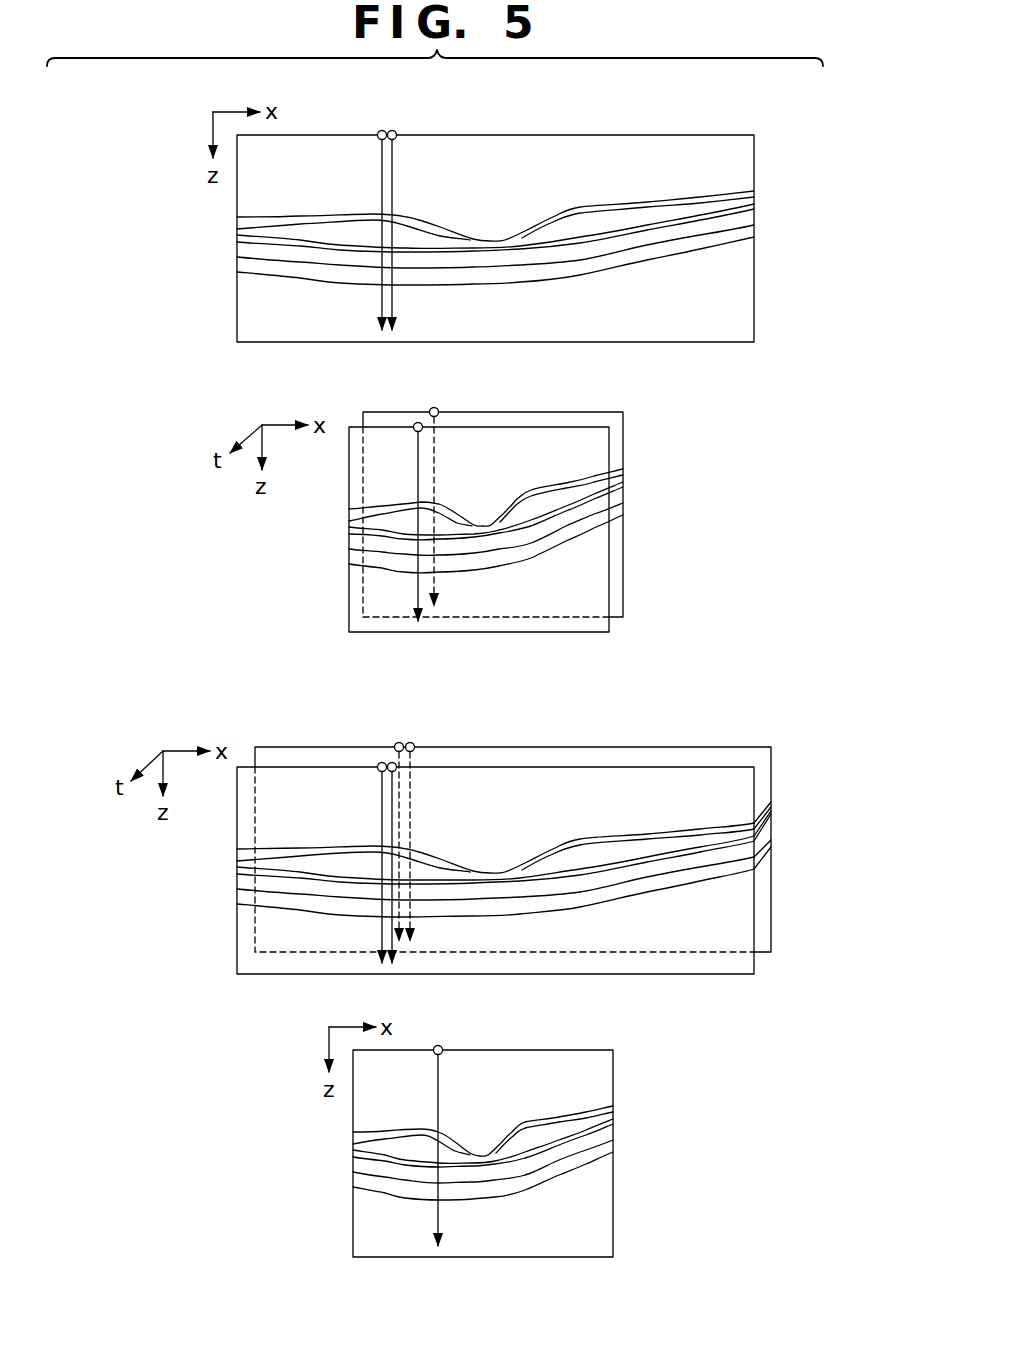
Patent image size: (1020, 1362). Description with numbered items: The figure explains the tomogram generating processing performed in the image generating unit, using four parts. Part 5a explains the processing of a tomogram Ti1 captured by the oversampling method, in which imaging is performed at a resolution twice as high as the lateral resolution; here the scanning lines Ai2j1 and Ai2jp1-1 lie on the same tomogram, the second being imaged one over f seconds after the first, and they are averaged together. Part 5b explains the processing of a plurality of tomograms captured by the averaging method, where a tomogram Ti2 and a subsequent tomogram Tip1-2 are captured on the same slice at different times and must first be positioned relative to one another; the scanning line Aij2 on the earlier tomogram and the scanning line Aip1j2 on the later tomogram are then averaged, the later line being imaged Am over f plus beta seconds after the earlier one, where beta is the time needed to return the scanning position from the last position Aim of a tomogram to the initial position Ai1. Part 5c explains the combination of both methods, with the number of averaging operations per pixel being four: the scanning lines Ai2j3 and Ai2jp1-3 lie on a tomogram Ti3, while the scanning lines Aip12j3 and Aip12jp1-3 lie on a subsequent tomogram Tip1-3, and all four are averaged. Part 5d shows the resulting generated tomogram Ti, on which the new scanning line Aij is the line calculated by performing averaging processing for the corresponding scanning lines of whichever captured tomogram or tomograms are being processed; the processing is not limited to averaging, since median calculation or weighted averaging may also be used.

The tomogram generating processing by the oversampling method 5a is at (155, 136).
The tomogram generating processing by the averaging method 5b is at (155, 442).
The tomogram generating processing by the combined oversampling and averaging method 5c is at (155, 871).
The generated tomogram 5d is at (280, 1098).
The tomogram captured by the oversampling method Ti1 is at (757, 307).
The tomogram captured by the averaging method Ti2 is at (625, 576).
The subsequent tomogram captured by the averaging method Tip1-2 is at (610, 631).
The tomogram captured by the combined method Ti3 is at (772, 913).
The subsequent tomogram captured by the combined method Tip1-3 is at (756, 969).
The generated tomogram Ti is at (615, 1241).
The scanning line Ai2j1 is at (379, 130).
The scanning line Ai2jp1-1 is at (395, 130).
The initial scanning line position Ai1 is at (362, 410).
The last scanning line position Aim is at (624, 411).
The scanning line Aip1j2 is at (418, 422).
The scanning line Aij2 is at (436, 408).
The scanning line Aip12j3 is at (380, 763).
The scanning line Aip12jp1-3 is at (392, 762).
The scanning line Ai2j3 is at (399, 742).
The scanning line Ai2jp1-3 is at (411, 742).
The new scanning line Aij is at (440, 1046).